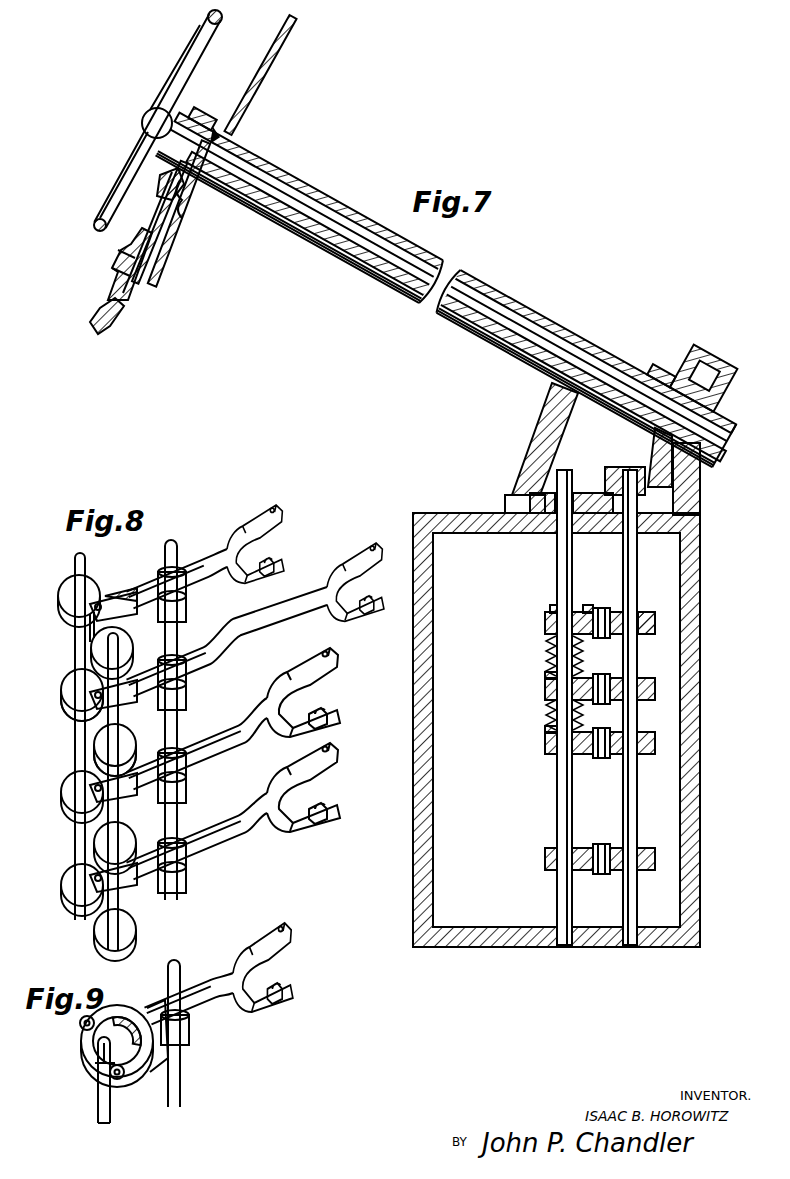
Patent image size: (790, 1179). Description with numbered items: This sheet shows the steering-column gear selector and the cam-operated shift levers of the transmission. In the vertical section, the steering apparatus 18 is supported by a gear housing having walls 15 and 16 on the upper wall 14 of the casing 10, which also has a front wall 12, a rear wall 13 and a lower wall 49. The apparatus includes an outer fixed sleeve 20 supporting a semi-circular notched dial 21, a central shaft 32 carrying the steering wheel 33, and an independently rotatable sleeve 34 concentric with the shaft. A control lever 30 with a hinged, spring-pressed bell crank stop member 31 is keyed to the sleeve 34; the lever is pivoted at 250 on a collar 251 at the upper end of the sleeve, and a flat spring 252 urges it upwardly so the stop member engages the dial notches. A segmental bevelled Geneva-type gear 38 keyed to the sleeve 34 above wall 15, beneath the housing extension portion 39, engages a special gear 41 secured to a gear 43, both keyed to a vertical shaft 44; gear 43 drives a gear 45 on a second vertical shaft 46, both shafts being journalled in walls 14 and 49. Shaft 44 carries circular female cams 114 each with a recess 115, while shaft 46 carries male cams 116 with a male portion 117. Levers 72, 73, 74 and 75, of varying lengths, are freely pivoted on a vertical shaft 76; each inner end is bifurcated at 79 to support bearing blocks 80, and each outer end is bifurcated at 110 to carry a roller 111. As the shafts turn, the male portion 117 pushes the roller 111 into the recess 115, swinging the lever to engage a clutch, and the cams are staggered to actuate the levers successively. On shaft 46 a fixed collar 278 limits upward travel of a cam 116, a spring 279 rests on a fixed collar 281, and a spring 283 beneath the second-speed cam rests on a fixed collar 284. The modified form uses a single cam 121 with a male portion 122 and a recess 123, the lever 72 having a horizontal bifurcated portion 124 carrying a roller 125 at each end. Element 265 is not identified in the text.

In FIG. 7, the casing 10 is at (409, 739).
In FIG. 7, the front wall 12 is at (699, 647).
In FIG. 7, the rear wall 13 is at (412, 667).
In FIG. 7, the upper wall 14 is at (473, 513).
In FIG. 7, the gear housing wall 15 is at (700, 494).
In FIG. 7, the gear housing wall 16 is at (535, 447).
In FIG. 7, the steering apparatus 18 is at (352, 206).
In FIG. 7, the outer fixed sleeve 20 is at (307, 186).
In FIG. 7, the dial 21 is at (270, 55).
In FIG. 7, the control lever 30 is at (108, 269).
In FIG. 7, the stop member 31 is at (117, 320).
In FIG. 7, the central shaft 32 is at (264, 172).
In FIG. 7, the steering wheel 33 is at (183, 67).
In FIG. 7, the sleeve 34 is at (247, 148).
In FIG. 7, the segmental bevelled gear 38 is at (650, 453).
In FIG. 7, the extension portion 39 is at (687, 362).
In FIG. 7, the special gear 41 is at (620, 467).
In FIG. 7, the gear 43 is at (597, 490).
In FIG. 7, the vertical shaft 44 is at (638, 570).
In FIG. 8, the vertical shaft 44 is at (87, 566).
In FIG. 9, the vertical shaft 44 is at (97, 1108).
In FIG. 7, the gear 45 is at (550, 494).
In FIG. 7, the second vertical shaft 46 is at (556, 562).
In FIG. 8, the second vertical shaft 46 is at (107, 648).
In FIG. 7, the lower wall 49 is at (531, 948).
In FIG. 8, the lever 72 is at (158, 585).
In FIG. 9, the lever 72 is at (190, 998).
In FIG. 8, the lever 73 is at (208, 648).
In FIG. 8, the lever 74 is at (178, 750).
In FIG. 8, the lever 75 is at (178, 842).
In FIG. 8, the vertical shaft 76 is at (174, 552).
In FIG. 9, the vertical shaft 76 is at (181, 973).
In FIG. 8, the bifurcated portion 79 is at (236, 518).
In FIG. 9, the bifurcated portion 79 is at (254, 937).
In FIG. 8, the bearing blocks 80 is at (268, 560).
In FIG. 9, the bearing blocks 80 is at (277, 977).
In FIG. 7, the bifurcated portion 110 is at (611, 607).
In FIG. 8, the bifurcated portion 110 is at (112, 596).
In FIG. 7, the roller 111 is at (606, 611).
In FIG. 8, the roller 111 is at (88, 637).
In FIG. 7, the circular cam 114 is at (640, 614).
In FIG. 8, the circular cam 114 is at (70, 684).
In FIG. 8, the recess 115 is at (65, 704).
In FIG. 7, the cam 116 is at (543, 623).
In FIG. 8, the cam 116 is at (123, 653).
In FIG. 8, the male portion 117 is at (127, 753).
In FIG. 9, the cam 121 is at (95, 1060).
In FIG. 9, the male portion 122 is at (100, 1040).
In FIG. 9, the recess 123 is at (112, 1064).
In FIG. 9, the horizontal bifurcated portion 124 is at (123, 1006).
In FIG. 9, the roller 125 is at (81, 1027).
In FIG. 7, the pivot 250 is at (158, 192).
In FIG. 7, the collar 251 is at (202, 117).
In FIG. 7, the flat spring 252 is at (186, 210).
In FIG. 7, the tube 265 is at (165, 243).
In FIG. 7, the fixed collar 278 is at (549, 607).
In FIG. 7, the spring 279 is at (548, 654).
In FIG. 7, the fixed collar 281 is at (545, 673).
In FIG. 7, the spring 283 is at (552, 712).
In FIG. 7, the fixed collar 284 is at (546, 730).